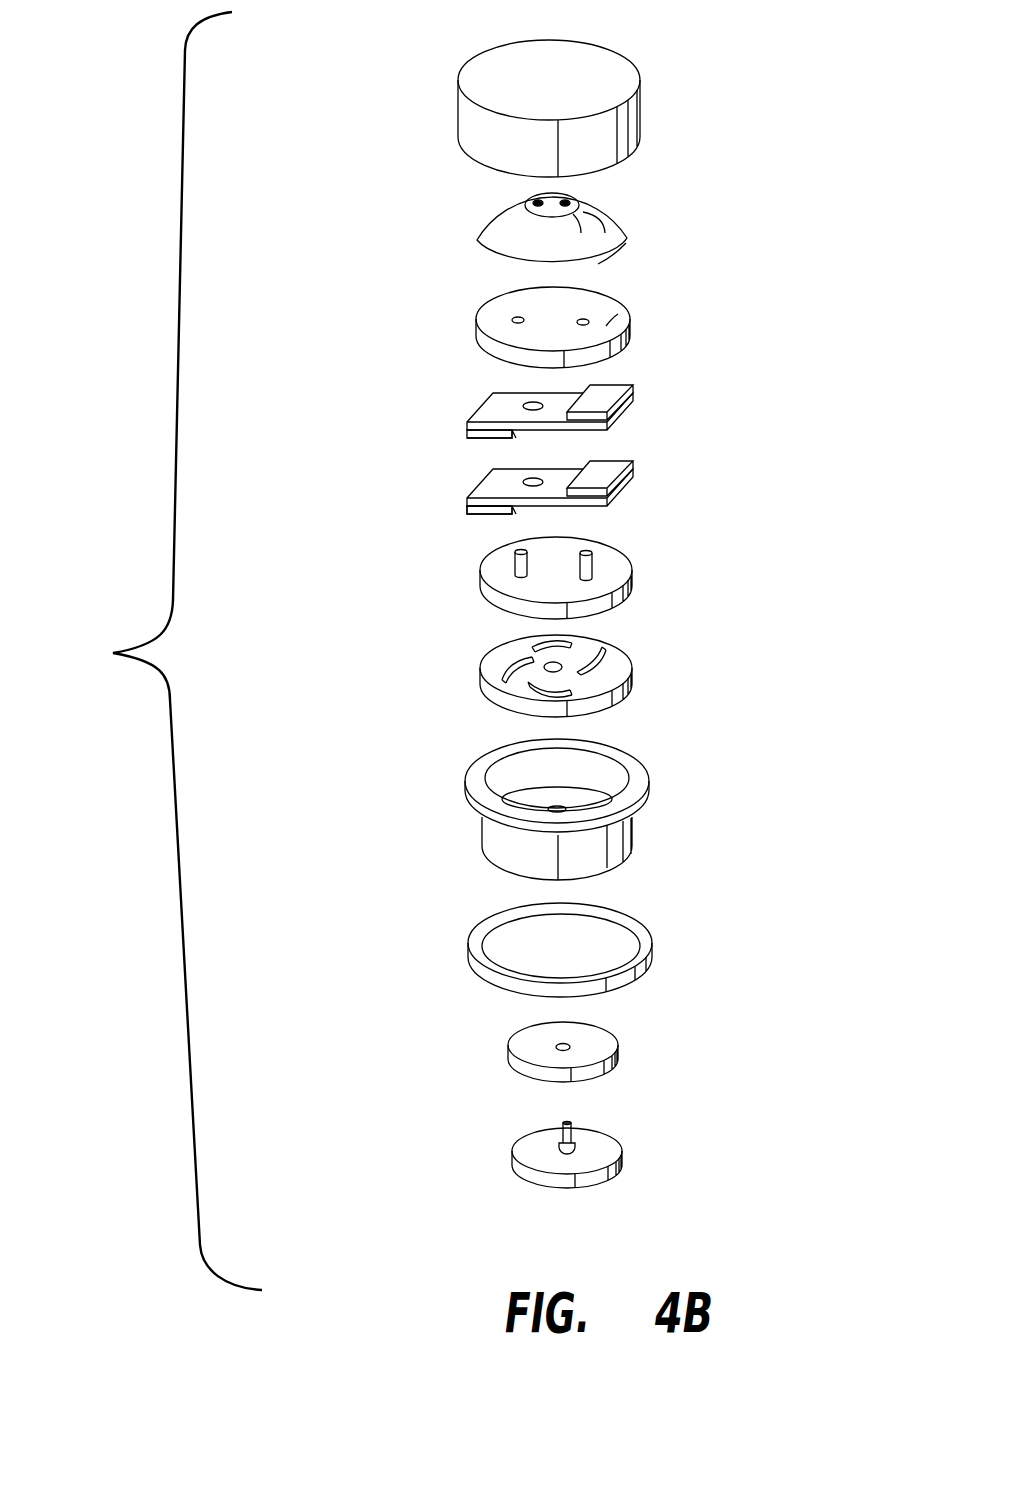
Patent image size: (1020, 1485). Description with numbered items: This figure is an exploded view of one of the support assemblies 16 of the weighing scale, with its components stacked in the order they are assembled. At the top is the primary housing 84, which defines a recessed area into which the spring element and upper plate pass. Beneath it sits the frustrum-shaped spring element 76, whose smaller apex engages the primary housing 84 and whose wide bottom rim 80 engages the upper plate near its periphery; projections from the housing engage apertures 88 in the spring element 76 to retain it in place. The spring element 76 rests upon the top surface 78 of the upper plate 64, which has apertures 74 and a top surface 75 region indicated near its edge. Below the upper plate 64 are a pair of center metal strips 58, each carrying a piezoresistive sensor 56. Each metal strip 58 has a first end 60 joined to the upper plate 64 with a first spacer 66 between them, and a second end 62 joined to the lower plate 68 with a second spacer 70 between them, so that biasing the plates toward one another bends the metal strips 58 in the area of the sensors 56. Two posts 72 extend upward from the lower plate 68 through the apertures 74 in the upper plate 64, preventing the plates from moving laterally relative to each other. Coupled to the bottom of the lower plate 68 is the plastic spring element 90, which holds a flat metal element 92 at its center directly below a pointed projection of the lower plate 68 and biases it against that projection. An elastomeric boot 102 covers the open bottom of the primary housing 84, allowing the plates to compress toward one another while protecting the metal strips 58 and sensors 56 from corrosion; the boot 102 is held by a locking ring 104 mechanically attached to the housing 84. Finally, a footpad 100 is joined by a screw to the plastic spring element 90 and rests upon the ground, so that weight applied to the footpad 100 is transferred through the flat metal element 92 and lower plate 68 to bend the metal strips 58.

The support assembly 16 is at (163, 651).
The primary housing 84 is at (629, 118).
The frustrum-shaped spring element 76 is at (587, 213).
The apertures 88 is at (538, 203).
The wide bottom rim 80 is at (601, 258).
The upper plate 64 is at (600, 297).
The apertures 74 is at (583, 321).
The disc top surface 75 is at (607, 325).
The sensors 56 is at (532, 403).
The first spacer 66 is at (612, 392).
The first end 60 is at (618, 420).
The center metal strips 58 is at (600, 430).
The second end 62 is at (480, 487).
The second spacer 70 is at (485, 513).
The lower plate 68 is at (497, 585).
The posts 72 is at (528, 563).
The plastic spring element 90 is at (608, 675).
The flat metal element 92 is at (565, 667).
The elastomeric boot 102 is at (615, 832).
The locking ring 104 is at (645, 950).
The footpad 100 is at (605, 1031).
The top surface 78 is at (570, 1125).